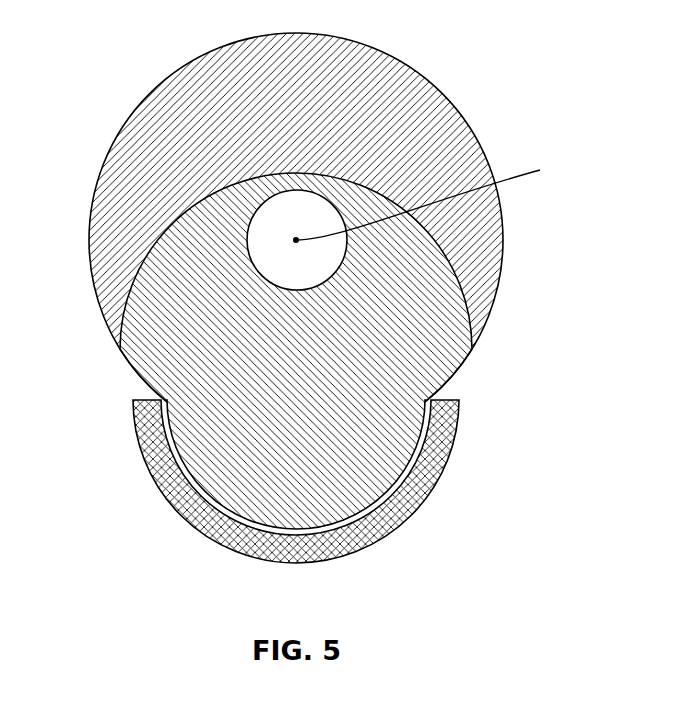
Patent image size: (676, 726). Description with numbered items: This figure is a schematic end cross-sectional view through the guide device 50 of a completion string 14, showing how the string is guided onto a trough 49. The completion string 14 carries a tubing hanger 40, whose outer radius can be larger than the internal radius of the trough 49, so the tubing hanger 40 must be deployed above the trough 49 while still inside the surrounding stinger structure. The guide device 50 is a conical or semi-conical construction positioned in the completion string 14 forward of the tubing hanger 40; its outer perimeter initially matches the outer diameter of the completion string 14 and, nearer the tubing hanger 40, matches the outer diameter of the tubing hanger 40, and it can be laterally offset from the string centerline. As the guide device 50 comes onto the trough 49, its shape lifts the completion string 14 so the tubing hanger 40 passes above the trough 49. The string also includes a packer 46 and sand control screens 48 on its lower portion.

The completion string 14 is at (294, 328).
The tubing hanger 40 is at (310, 50).
The packer 46 is at (250, 257).
The sand control screens 48 is at (217, 543).
The trough 49 is at (208, 653).
The guide device 50 is at (427, 345).